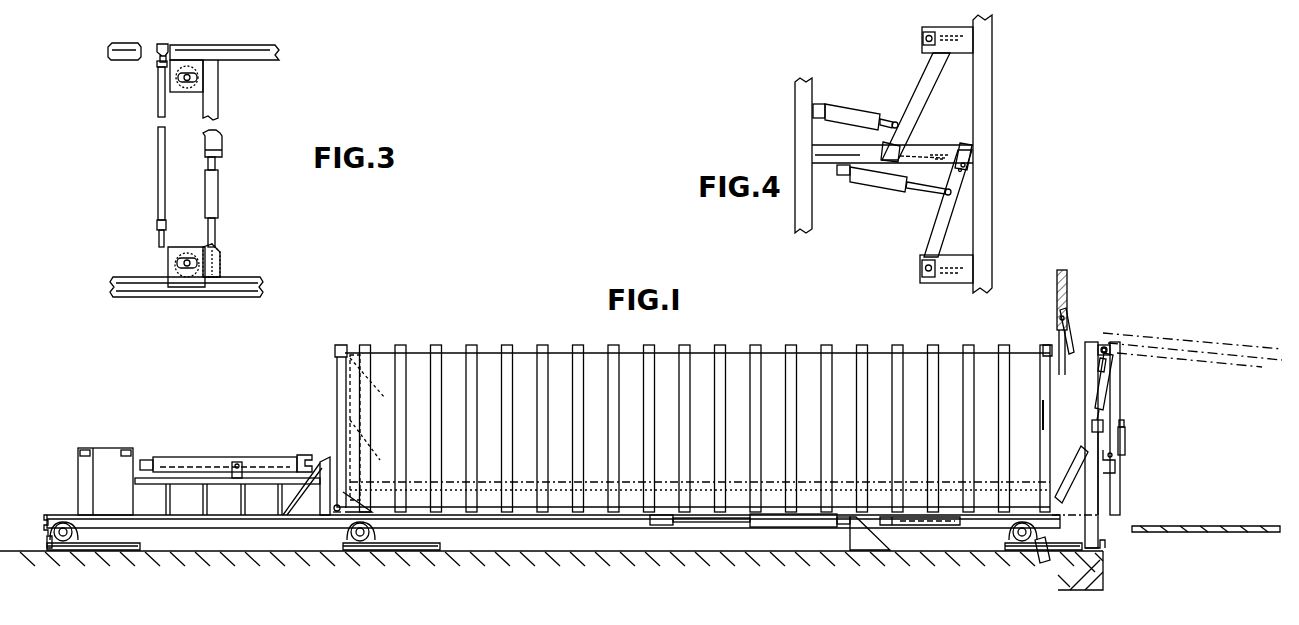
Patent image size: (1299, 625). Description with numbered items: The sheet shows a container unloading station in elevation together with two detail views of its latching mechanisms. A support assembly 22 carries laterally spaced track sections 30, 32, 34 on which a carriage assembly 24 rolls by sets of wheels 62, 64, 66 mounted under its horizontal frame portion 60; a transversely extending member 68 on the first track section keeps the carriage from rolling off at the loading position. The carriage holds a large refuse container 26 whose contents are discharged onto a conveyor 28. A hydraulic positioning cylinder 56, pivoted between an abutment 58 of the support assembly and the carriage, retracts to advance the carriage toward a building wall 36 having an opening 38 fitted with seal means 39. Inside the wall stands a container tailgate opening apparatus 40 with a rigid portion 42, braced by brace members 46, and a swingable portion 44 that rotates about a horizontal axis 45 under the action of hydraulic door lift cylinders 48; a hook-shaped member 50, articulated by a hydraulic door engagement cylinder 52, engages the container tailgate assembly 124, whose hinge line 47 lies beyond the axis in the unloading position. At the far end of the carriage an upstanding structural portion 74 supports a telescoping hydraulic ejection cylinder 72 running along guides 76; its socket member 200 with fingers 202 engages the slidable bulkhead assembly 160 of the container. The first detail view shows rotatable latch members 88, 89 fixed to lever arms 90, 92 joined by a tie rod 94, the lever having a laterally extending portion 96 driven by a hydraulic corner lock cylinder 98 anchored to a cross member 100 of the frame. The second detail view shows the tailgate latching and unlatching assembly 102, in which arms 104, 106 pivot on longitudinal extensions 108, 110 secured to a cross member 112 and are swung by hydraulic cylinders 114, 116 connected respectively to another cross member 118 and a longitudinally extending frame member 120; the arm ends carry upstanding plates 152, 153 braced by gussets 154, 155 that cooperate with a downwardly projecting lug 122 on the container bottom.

In FIG. 1, the support assembly 22 is at (1015, 560).
In FIG. 1, the carriage assembly 24 is at (605, 528).
In FIG. 1, the refuse container 26 is at (614, 344).
In FIG. 1, the conveyor 28 is at (1238, 526).
In FIG. 1, the first track section 30 is at (140, 545).
In FIG. 1, the track section 32 is at (440, 545).
In FIG. 1, the track section 34 is at (1068, 552).
In FIG. 1, the building wall 36 is at (1067, 288).
In FIG. 1, the opening 38 is at (1058, 328).
In FIG. 1, the seal means 39 is at (1068, 325).
In FIG. 1, the container tailgate opening apparatus 40 is at (1097, 538).
In FIG. 1, the rigid portion 42 is at (1085, 397).
In FIG. 1, the swingable portion 44 is at (1120, 504).
In FIG. 1, the horizontal axis 45 is at (1098, 347).
In FIG. 1, the brace members 46 is at (1040, 555).
In FIG. 1, the hinge line 47 is at (1046, 344).
In FIG. 1, the hydraulic door lift cylinder 48 is at (1112, 390).
In FIG. 1, the hook-shaped member 50 is at (1115, 470).
In FIG. 1, the hydraulic door engagement cylinder 52 is at (1126, 441).
In FIG. 1, the hydraulic positioning cylinder 56 is at (792, 528).
In FIG. 1, the abutment 58 is at (880, 538).
In FIG. 3, the frame portion 60 is at (263, 280).
In FIG. 4, the frame portion 60 is at (998, 180).
In FIG. 1, the frame portion 60 is at (552, 518).
In FIG. 1, the wheels 62 is at (70, 541).
In FIG. 1, the wheels 64 is at (365, 545).
In FIG. 1, the wheels 66 is at (1010, 535).
In FIG. 1, the transversely extending member 68 is at (44, 548).
In FIG. 1, the telescoping hydraulic ejection cylinder 72 is at (207, 457).
In FIG. 1, the upstanding structural portion 74 is at (119, 448).
In FIG. 1, the guides 76 is at (219, 484).
In FIG. 3, the rotatable latch member 88 is at (185, 268).
In FIG. 1, the rotatable latch member 88 is at (337, 514).
In FIG. 3, the rotatable latch member 89 is at (178, 85).
In FIG. 3, the lever arm 90 is at (168, 252).
In FIG. 3, the lever arm 92 is at (167, 52).
In FIG. 3, the tie rod 94 is at (158, 172).
In FIG. 3, the laterally extending portion 96 is at (221, 265).
In FIG. 3, the hydraulic corner lock cylinder 98 is at (219, 190).
In FIG. 3, the cross member 100 is at (218, 96).
In FIG. 4, the container tailgate latching and unlatching assembly 102 is at (910, 72).
In FIG. 4, the latching arm 104 is at (918, 96).
In FIG. 4, the unlatching arm 106 is at (930, 227).
In FIG. 4, the longitudinal extension 108 is at (948, 28).
In FIG. 4, the longitudinal extension 110 is at (941, 283).
In FIG. 4, the cross member 112 is at (989, 70).
In FIG. 4, the hydraulic cylinder 114 is at (840, 108).
In FIG. 4, the hydraulic cylinder 116 is at (883, 187).
In FIG. 4, the cross member 118 is at (795, 112).
In FIG. 4, the longitudinally extending frame member 120 is at (823, 143).
In FIG. 4, the lug 122 is at (958, 143).
In FIG. 1, the container tailgate assembly 124 is at (1040, 420).
In FIG. 4, the vertically upstanding plate 152 is at (915, 146).
In FIG. 4, the vertically upstanding projection or plate 153 is at (960, 167).
In FIG. 4, the bracing gussets 154 is at (900, 146).
In FIG. 4, the gusset plates 155 is at (965, 172).
In FIG. 1, the bulkhead assembly 160 is at (350, 396).
In FIG. 1, the socket member 200 is at (305, 455).
In FIG. 1, the fingers 202 is at (325, 458).